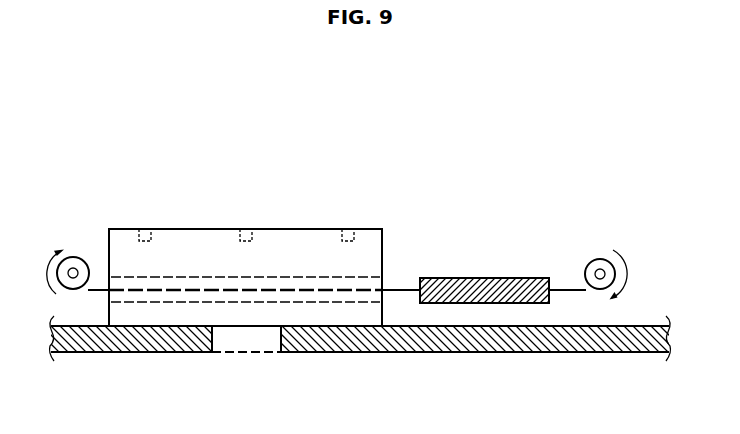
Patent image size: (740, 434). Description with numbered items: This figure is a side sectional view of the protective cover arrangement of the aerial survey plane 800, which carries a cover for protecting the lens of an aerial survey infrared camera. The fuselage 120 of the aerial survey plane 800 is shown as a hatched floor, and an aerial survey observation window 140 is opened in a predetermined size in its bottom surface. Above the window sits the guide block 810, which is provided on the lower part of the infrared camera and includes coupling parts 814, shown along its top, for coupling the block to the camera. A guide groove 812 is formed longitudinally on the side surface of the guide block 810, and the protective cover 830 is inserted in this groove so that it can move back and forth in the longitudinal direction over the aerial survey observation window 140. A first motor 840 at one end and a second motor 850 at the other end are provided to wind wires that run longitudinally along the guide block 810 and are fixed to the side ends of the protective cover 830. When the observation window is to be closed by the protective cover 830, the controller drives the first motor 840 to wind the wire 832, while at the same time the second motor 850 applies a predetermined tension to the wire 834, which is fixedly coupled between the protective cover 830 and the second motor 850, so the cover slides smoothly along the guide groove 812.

The aerial survey plane 800 is at (336, 118).
The guide block 810 is at (367, 243).
The guide groove 812 is at (158, 297).
The coupling part 814 is at (344, 229).
The protective cover 830 is at (495, 287).
The wire 832 is at (93, 292).
The wire 834 is at (572, 291).
The first motor 840 is at (74, 264).
The second motor 850 is at (601, 261).
The fuselage 120 is at (333, 342).
The aerial survey observation window 140 is at (237, 338).